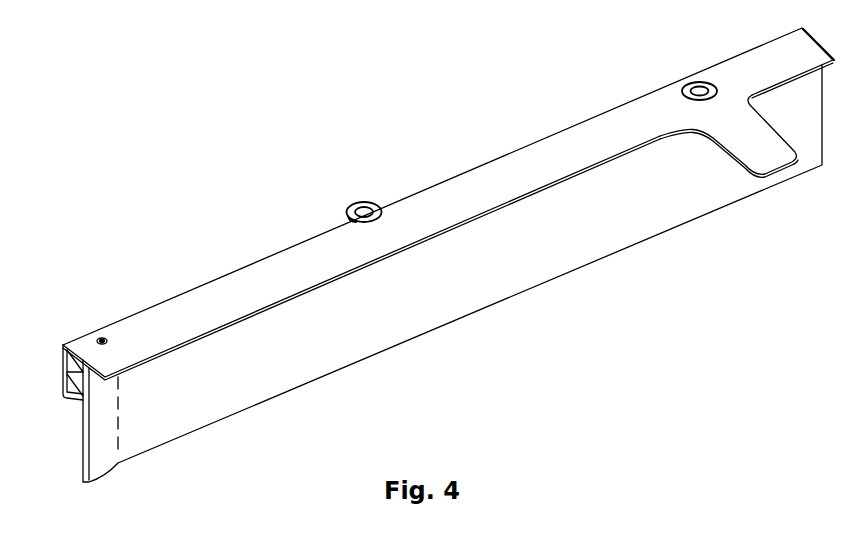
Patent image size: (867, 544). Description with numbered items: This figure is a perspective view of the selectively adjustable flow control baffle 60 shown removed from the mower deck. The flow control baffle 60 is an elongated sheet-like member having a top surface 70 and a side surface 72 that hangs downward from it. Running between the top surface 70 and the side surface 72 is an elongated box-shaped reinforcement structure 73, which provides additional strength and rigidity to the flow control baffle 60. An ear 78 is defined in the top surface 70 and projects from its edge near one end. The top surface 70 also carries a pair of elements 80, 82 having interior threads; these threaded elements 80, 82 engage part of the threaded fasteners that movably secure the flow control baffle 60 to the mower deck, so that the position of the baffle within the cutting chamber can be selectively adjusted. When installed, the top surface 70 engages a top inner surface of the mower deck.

The flow control baffle 60 is at (262, 190).
The top surface 70 is at (559, 151).
The side surface 72 is at (82, 434).
The box-shaped reinforcement structure 73 is at (63, 390).
The ear 78 is at (744, 165).
The element having interior threads 80 is at (704, 82).
The element having interior threads 82 is at (368, 203).